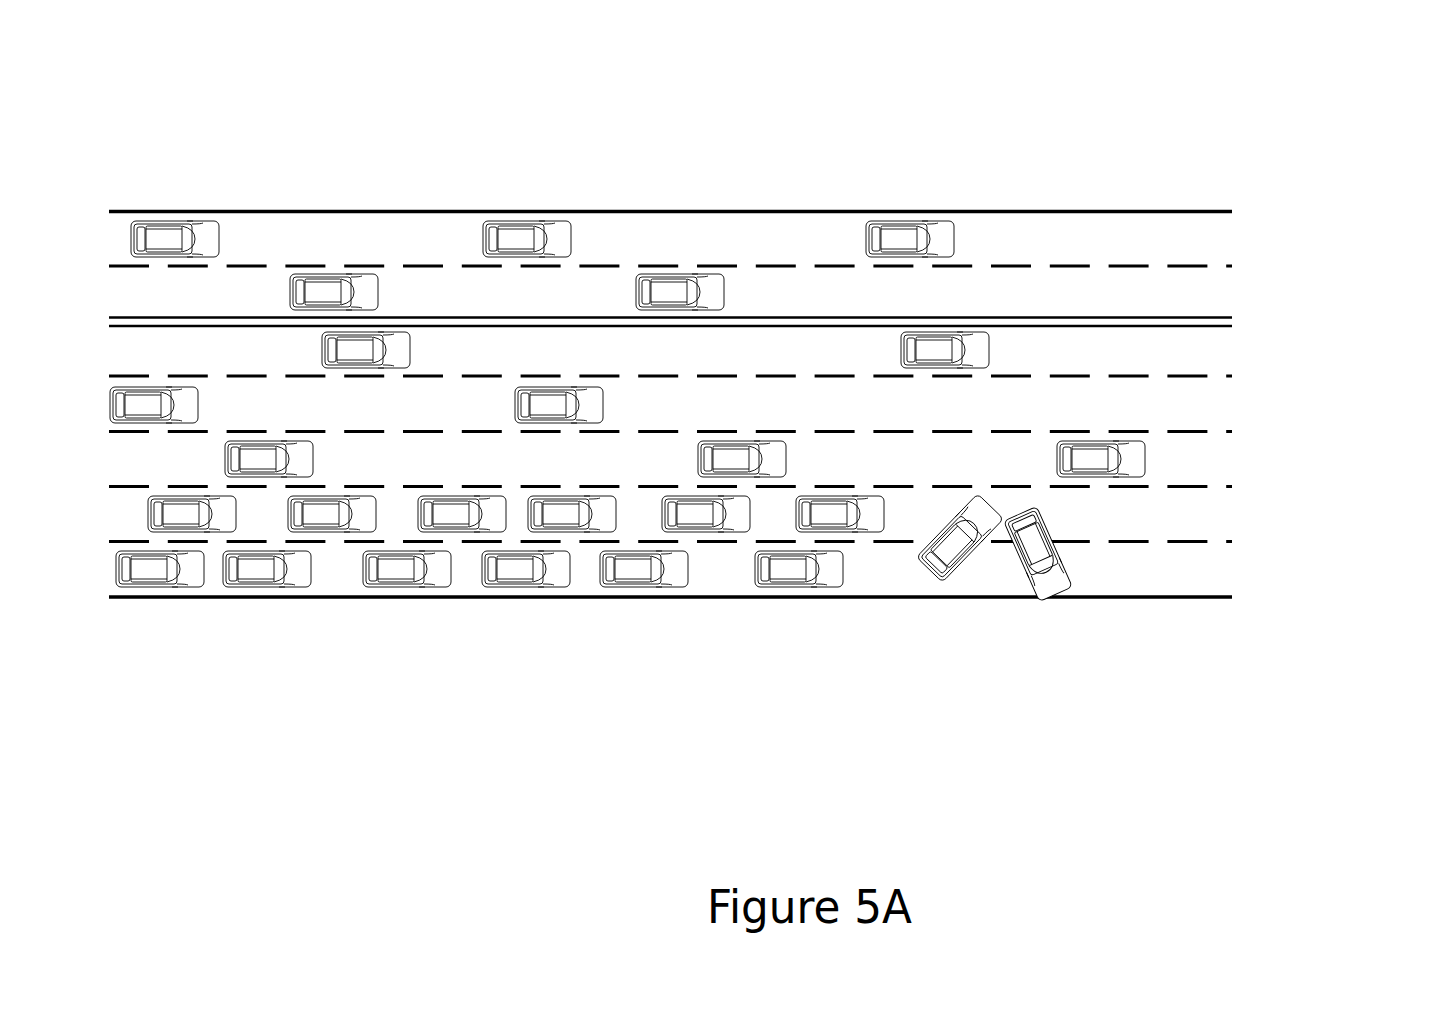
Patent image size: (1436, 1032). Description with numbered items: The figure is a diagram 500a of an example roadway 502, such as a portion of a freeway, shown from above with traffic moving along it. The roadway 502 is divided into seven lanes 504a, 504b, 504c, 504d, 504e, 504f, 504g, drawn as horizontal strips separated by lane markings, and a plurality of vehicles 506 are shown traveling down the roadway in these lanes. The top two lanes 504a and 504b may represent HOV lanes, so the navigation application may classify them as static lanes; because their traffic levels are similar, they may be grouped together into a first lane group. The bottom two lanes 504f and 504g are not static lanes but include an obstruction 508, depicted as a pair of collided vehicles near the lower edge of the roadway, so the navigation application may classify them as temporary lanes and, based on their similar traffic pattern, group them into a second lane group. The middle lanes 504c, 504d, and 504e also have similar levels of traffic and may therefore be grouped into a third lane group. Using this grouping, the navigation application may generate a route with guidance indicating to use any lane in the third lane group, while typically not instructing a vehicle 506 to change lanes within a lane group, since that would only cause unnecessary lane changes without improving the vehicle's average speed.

The diagram 500a is at (163, 76).
The roadway 502 is at (712, 120).
The lane 504a is at (1225, 238).
The lane 504b is at (1225, 292).
The lane 504c is at (1225, 349).
The lane 504d is at (1225, 404).
The lane 504e is at (1225, 459).
The lane 504f is at (1225, 514).
The lane 504g is at (1225, 569).
The vehicle 506 is at (515, 230).
The collision 508 is at (1007, 612).